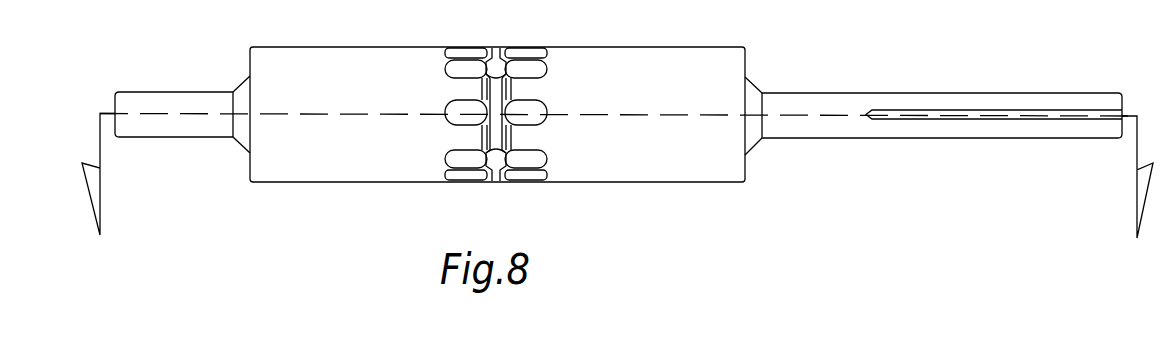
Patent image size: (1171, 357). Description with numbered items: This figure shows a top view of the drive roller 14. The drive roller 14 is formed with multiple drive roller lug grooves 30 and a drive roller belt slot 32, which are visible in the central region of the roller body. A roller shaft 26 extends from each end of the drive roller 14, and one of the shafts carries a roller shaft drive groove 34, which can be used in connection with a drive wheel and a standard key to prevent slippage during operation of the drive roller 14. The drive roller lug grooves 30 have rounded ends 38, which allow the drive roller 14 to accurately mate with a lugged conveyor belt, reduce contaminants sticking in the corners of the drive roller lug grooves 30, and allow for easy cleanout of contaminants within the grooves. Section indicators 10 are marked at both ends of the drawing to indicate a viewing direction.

The section line indicator 10 is at (612, 206).
The drive roller 14 is at (703, 47).
The roller shaft 26 is at (168, 92).
The drive roller lug grooves 30 is at (463, 108).
The drive roller belt slot 32 is at (498, 60).
The roller shaft drive groove 34 is at (1068, 114).
The rounded ends 38 is at (552, 100).